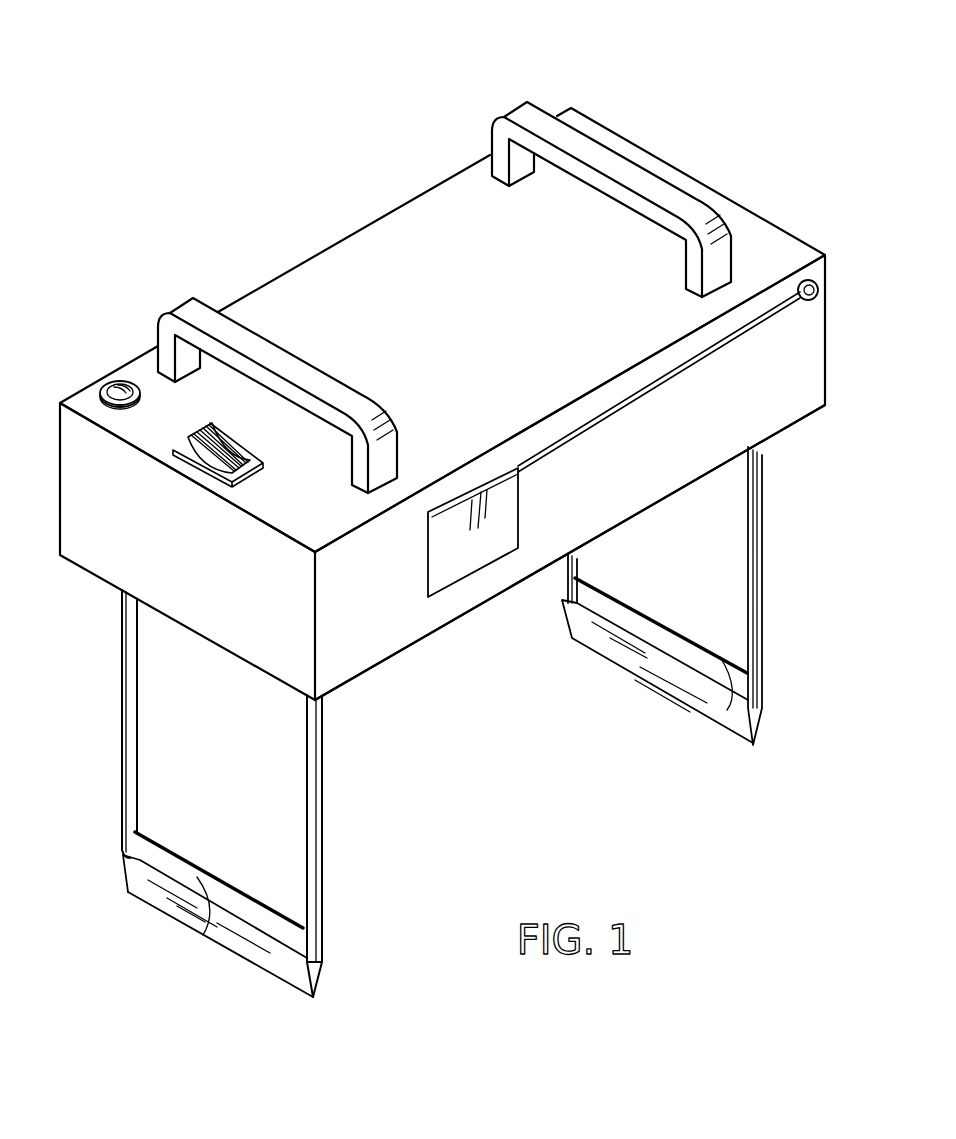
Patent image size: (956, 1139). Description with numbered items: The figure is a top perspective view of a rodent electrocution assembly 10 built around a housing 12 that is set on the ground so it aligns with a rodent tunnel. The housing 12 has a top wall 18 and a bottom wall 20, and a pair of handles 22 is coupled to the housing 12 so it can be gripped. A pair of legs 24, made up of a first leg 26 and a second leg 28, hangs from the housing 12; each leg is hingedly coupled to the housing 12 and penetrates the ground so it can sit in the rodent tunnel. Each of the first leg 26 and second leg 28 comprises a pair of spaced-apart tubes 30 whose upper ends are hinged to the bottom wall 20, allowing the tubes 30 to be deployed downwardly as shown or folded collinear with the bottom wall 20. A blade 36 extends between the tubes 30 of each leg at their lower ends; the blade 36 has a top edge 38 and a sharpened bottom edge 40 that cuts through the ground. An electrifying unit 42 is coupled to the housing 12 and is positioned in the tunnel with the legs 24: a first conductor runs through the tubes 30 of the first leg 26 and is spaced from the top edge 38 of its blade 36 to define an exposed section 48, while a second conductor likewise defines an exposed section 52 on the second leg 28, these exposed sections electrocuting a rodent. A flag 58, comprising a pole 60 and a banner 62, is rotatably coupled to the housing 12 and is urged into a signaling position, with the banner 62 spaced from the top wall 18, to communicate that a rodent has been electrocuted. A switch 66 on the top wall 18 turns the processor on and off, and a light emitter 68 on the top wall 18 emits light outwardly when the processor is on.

The rodent electrocution assembly 10 is at (772, 101).
The housing 12 is at (822, 252).
The top wall 18 is at (392, 245).
The bottom wall 20 is at (447, 627).
The handles 22 is at (200, 317).
The legs 24 is at (356, 798).
The first leg 26 is at (244, 838).
The second leg 28 is at (699, 628).
The tubes 30 is at (307, 747).
The blade 36 is at (145, 890).
The top edge 38 is at (127, 838).
The bottom edge 40 is at (275, 978).
The electrifying unit 42 is at (710, 600).
The exposed section 48 is at (203, 878).
The exposed section 52 is at (725, 712).
The flag 58 is at (772, 358).
The pole 60 is at (816, 312).
The banner 62 is at (500, 557).
The switch 66 is at (205, 436).
The light emitter 68 is at (108, 391).